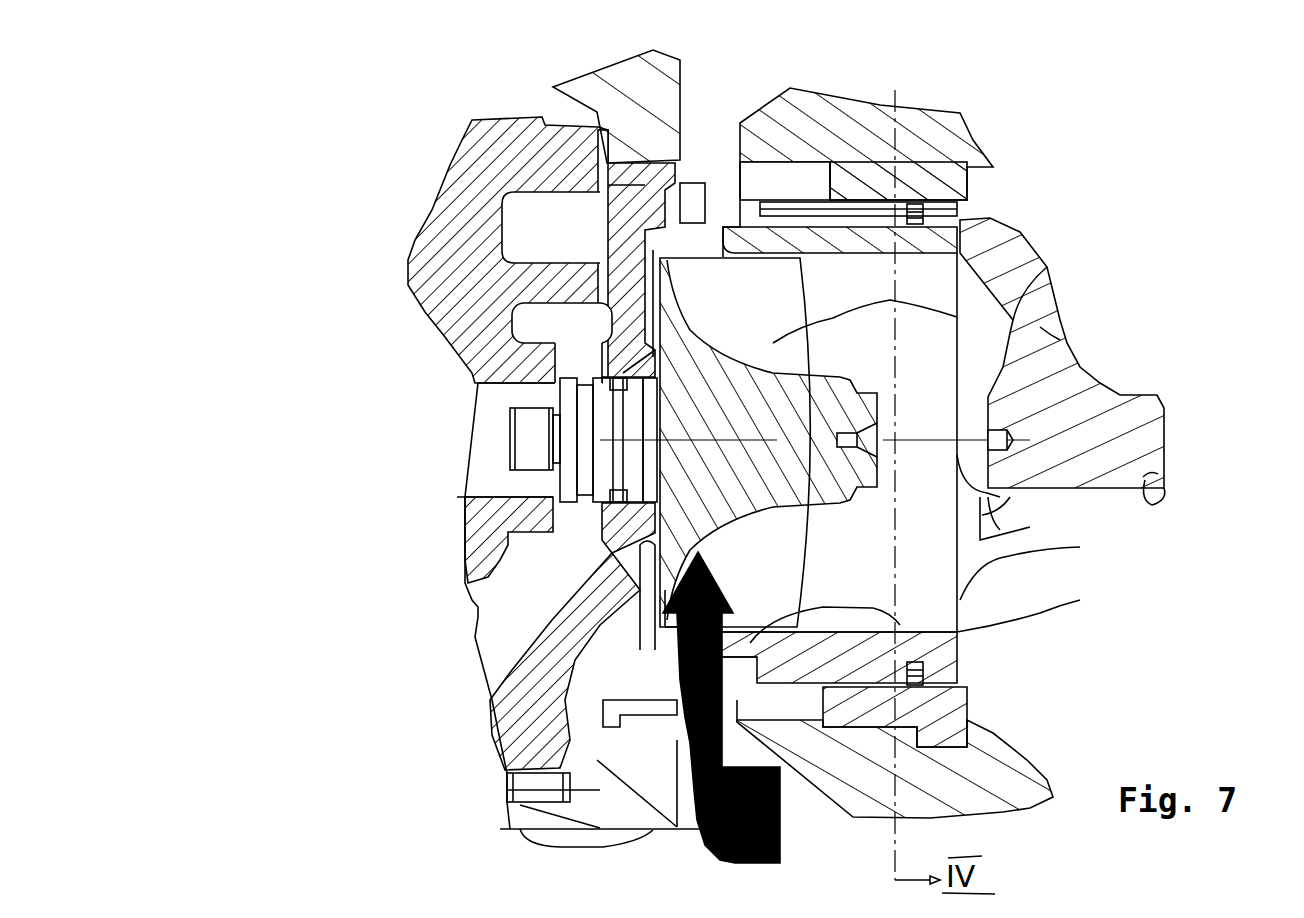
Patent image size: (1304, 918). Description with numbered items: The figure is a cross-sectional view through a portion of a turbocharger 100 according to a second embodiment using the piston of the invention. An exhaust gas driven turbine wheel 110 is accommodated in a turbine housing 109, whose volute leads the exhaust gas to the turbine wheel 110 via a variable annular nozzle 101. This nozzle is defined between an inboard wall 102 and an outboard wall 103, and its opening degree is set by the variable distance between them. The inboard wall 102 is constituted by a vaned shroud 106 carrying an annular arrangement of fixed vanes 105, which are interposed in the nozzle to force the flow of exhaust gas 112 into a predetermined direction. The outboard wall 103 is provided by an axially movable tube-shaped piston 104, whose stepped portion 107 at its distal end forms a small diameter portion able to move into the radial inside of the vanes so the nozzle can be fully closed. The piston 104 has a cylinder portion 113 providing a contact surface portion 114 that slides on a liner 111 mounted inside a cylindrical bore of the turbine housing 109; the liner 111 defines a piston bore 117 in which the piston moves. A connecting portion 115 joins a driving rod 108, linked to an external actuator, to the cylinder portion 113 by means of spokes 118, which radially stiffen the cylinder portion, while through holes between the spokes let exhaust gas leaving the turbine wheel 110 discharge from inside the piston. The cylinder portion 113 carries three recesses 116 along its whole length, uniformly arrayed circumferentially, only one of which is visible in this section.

The turbocharger 100 is at (280, 290).
The variable annular nozzle 101 is at (713, 150).
The inboard wall 102 is at (680, 183).
The outboard wall 103 is at (718, 240).
The tube-shaped piston 104 is at (1047, 383).
The fixed vanes 105 is at (692, 203).
The vaned shroud 106 is at (660, 648).
The stepped portion 107 is at (938, 622).
The driving rod 108 is at (1209, 495).
The turbine housing 109 is at (882, 142).
The turbine wheel 110 is at (1149, 282).
The liner 111 is at (989, 406).
The flow of exhaust gas 112 is at (680, 687).
The cylinder portion 113 is at (968, 421).
The contact surface portion 114 is at (1019, 444).
The connecting portion 115 is at (1170, 320).
The recesses 116 is at (922, 194).
The piston bore 117 is at (840, 610).
The spokes 118 is at (1079, 543).